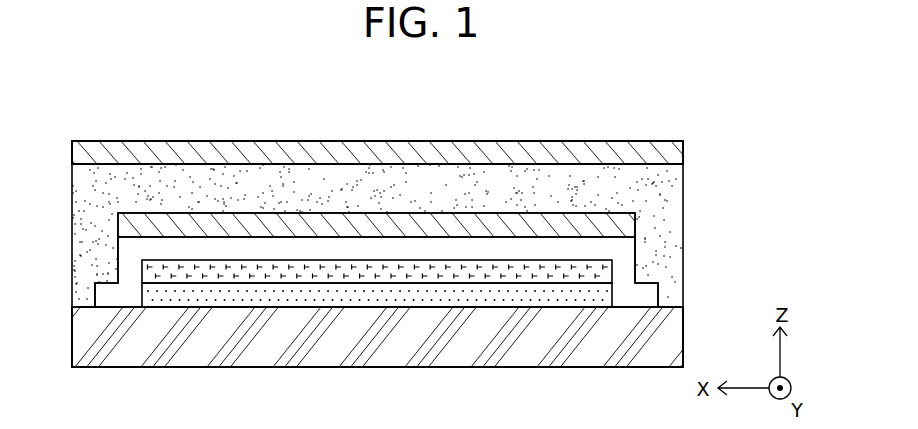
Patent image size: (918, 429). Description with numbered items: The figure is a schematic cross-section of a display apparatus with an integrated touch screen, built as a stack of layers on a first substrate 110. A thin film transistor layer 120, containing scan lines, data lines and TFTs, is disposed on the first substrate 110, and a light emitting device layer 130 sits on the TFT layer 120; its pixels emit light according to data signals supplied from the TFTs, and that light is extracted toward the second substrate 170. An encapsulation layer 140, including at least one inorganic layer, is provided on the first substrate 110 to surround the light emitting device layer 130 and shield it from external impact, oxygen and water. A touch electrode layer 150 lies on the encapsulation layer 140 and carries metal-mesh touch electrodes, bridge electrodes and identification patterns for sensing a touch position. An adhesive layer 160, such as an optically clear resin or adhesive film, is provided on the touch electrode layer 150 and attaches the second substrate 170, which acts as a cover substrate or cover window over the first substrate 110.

The first substrate 110 is at (676, 343).
The thin film transistor (TFT) layer 120 is at (590, 298).
The light emitting device layer 130 is at (590, 272).
The encapsulation layer 140 is at (627, 250).
The touch electrode layer 150 is at (628, 224).
The adhesive layer 160 is at (675, 190).
The second substrate 170 is at (675, 153).